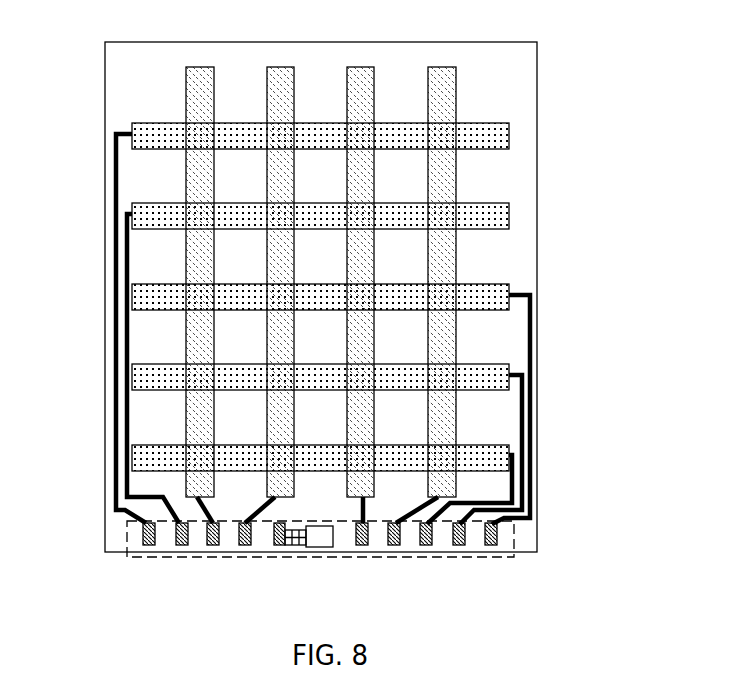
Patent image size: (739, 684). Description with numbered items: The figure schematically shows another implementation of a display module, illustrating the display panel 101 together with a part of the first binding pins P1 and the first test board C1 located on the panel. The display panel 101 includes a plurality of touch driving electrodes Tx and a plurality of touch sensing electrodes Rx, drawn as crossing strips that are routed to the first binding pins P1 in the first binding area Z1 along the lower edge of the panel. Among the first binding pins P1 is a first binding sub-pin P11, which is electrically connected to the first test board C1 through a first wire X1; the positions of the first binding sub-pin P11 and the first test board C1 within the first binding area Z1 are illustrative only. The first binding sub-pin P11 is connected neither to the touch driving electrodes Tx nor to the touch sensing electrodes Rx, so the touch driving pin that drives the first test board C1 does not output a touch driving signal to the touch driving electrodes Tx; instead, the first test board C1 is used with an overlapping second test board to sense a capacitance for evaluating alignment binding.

The display panel 101 is at (395, 42).
The touch driving electrodes Tx is at (160, 135).
The touch sensing electrodes Rx is at (455, 188).
The first binding pins P1 is at (182, 532).
The first binding sub-pin P11 is at (278, 543).
The first wire X1 is at (292, 544).
The first test board C1 is at (320, 540).
The first binding area Z1 is at (483, 557).